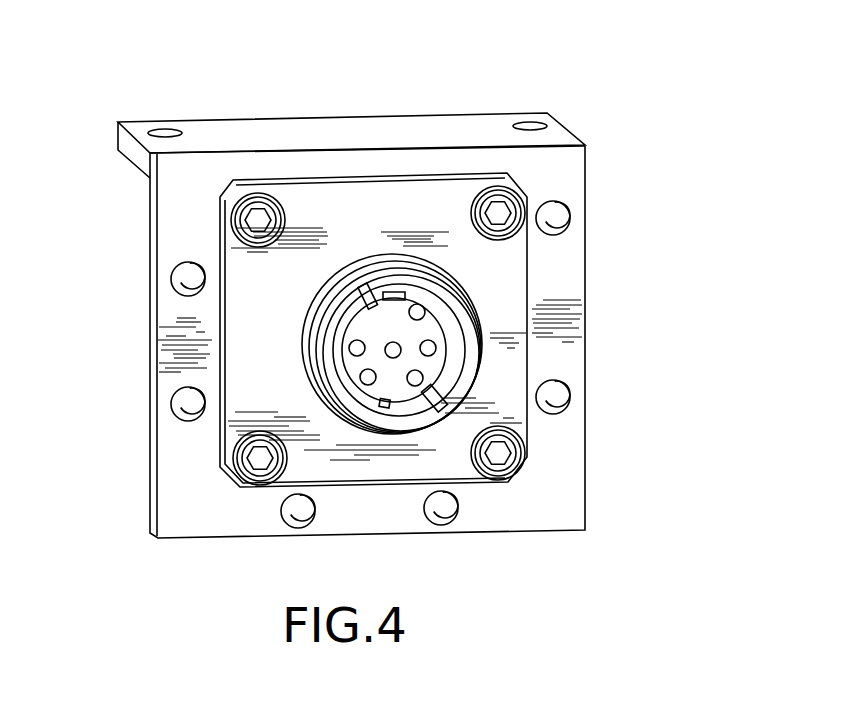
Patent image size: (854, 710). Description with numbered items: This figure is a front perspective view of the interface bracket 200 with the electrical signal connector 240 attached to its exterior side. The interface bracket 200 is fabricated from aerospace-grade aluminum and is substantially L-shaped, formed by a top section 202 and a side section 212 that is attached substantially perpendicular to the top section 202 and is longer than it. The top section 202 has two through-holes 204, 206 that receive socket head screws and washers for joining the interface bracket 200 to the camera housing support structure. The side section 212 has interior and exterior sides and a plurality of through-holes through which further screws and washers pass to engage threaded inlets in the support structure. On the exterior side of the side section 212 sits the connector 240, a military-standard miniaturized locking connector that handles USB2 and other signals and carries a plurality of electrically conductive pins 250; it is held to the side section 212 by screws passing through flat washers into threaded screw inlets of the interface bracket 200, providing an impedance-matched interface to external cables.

The interface bracket 200 is at (585, 145).
The top section 202 is at (273, 118).
The through-hole 204 is at (160, 132).
The through-hole 206 is at (532, 120).
The side section 212 is at (570, 513).
The electrical signal connector 240 is at (508, 317).
The electrically conductive pins 250 is at (368, 377).